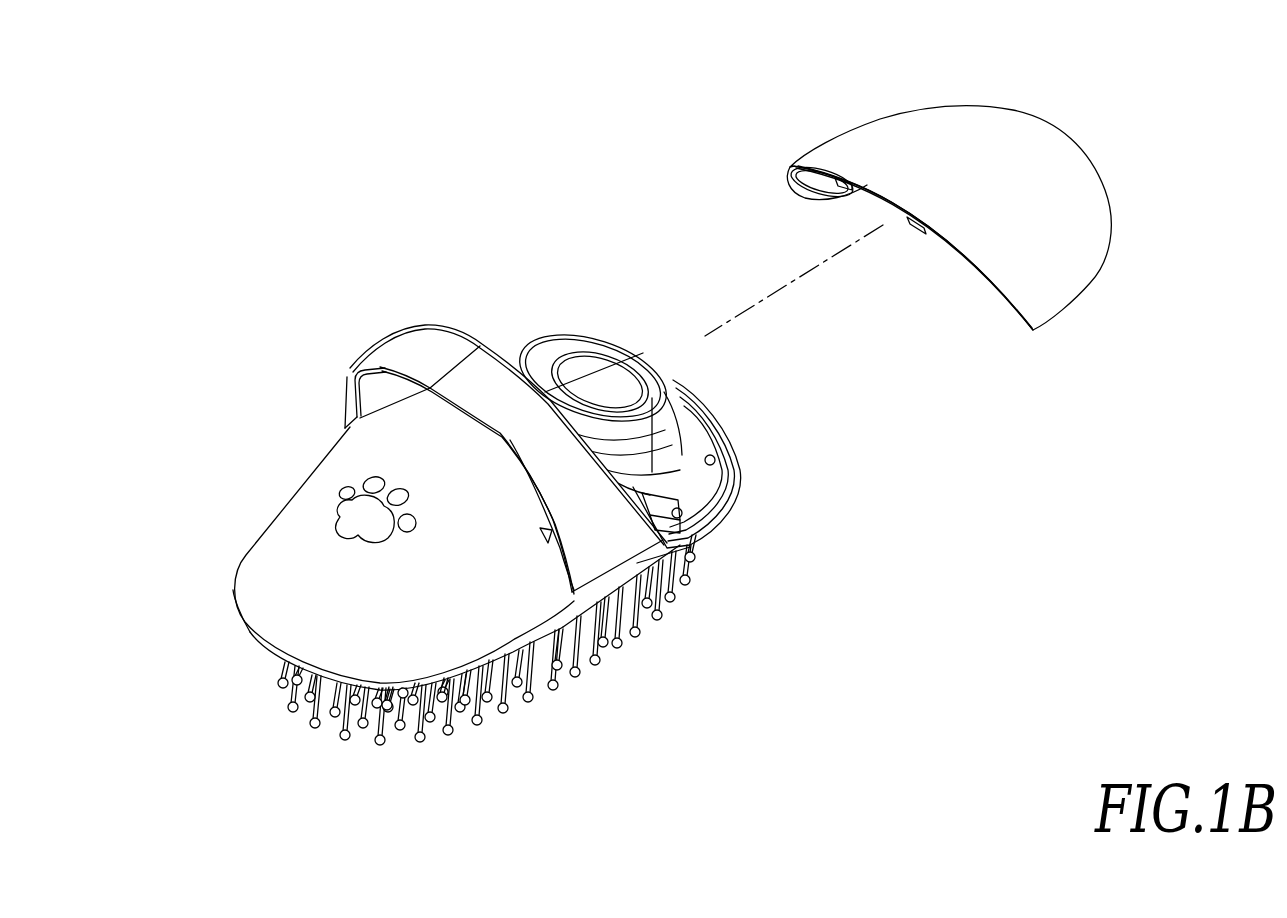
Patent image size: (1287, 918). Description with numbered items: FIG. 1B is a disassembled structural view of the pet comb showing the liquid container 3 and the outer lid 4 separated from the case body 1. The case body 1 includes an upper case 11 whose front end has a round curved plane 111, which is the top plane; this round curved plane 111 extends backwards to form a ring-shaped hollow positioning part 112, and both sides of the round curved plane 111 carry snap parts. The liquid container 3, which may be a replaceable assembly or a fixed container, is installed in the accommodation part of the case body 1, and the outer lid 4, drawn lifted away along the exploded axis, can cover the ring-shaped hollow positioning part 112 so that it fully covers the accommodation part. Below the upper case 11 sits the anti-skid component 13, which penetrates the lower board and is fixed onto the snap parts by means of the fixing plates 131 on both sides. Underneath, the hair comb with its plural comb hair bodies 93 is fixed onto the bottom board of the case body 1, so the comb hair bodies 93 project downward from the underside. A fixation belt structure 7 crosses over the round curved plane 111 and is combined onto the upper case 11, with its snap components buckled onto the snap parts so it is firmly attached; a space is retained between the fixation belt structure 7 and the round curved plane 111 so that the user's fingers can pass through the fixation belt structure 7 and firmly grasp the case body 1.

The case body 1 is at (238, 642).
The upper case 11 is at (262, 500).
The round curved plane 111 is at (360, 586).
The ring-shaped hollow positioning part 112 is at (700, 443).
The anti-skid component 13 is at (540, 632).
The fixing plates 131 is at (637, 563).
The liquid container 3 is at (572, 335).
The outer lid 4 is at (1043, 177).
The fixation belt structure 7 is at (413, 343).
The comb hair bodies 93 is at (623, 645).